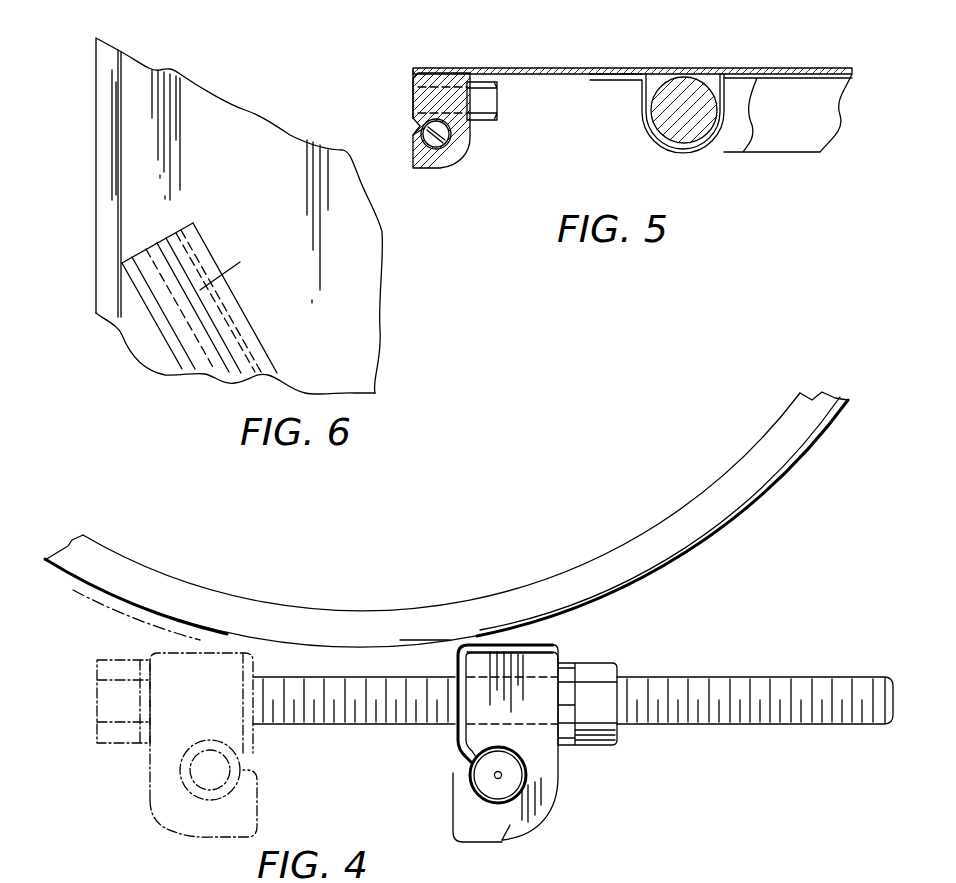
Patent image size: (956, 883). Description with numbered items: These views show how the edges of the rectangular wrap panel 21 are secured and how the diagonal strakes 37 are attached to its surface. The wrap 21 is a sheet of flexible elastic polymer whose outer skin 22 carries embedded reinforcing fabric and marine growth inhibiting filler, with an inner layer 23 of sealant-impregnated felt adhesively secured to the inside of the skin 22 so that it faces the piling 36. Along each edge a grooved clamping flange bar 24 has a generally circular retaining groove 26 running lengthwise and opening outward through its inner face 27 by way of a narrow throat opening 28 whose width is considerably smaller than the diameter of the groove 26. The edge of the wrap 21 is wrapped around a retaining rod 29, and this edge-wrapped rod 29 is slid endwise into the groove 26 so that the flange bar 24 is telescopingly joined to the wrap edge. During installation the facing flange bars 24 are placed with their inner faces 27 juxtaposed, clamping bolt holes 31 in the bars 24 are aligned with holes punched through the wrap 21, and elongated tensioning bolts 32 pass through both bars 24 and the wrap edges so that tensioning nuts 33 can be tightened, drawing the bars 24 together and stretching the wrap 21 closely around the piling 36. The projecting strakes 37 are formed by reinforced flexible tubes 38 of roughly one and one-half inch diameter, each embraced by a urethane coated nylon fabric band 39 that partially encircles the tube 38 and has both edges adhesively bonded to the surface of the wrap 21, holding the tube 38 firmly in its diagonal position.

In FIG. 6, the rectangular wrap panel 21 is at (214, 153).
In FIG. 5, the rectangular wrap panel 21 is at (623, 68).
In FIG. 4, the rectangular wrap panel 21 is at (812, 458).
In FIG. 4, the outer skin 22 is at (688, 562).
In FIG. 4, the inner layer 23 is at (742, 513).
In FIG. 6, the clamping flange bar 24 is at (95, 79).
In FIG. 5, the clamping flange bar 24 is at (462, 162).
In FIG. 4, the clamping flange bar 24 is at (547, 813).
In FIG. 4, the retaining groove 26 is at (540, 777).
In FIG. 4, the inner face 27 is at (453, 740).
In FIG. 4, the throat opening 28 is at (457, 758).
In FIG. 4, the retaining rod 29 is at (502, 840).
In FIG. 4, the clamping bolt hole 31 is at (542, 672).
In FIG. 4, the tensioning bolt 32 is at (678, 725).
In FIG. 4, the tensioning nut 33 is at (600, 667).
In FIG. 4, the piling 36 is at (632, 565).
In FIG. 6, the strake 37 is at (195, 228).
In FIG. 6, the reinforced flexible tube 38 is at (180, 388).
In FIG. 5, the reinforced flexible tube 38 is at (690, 96).
In FIG. 6, the nylon fabric band 39 is at (260, 363).
In FIG. 5, the nylon fabric band 39 is at (610, 83).